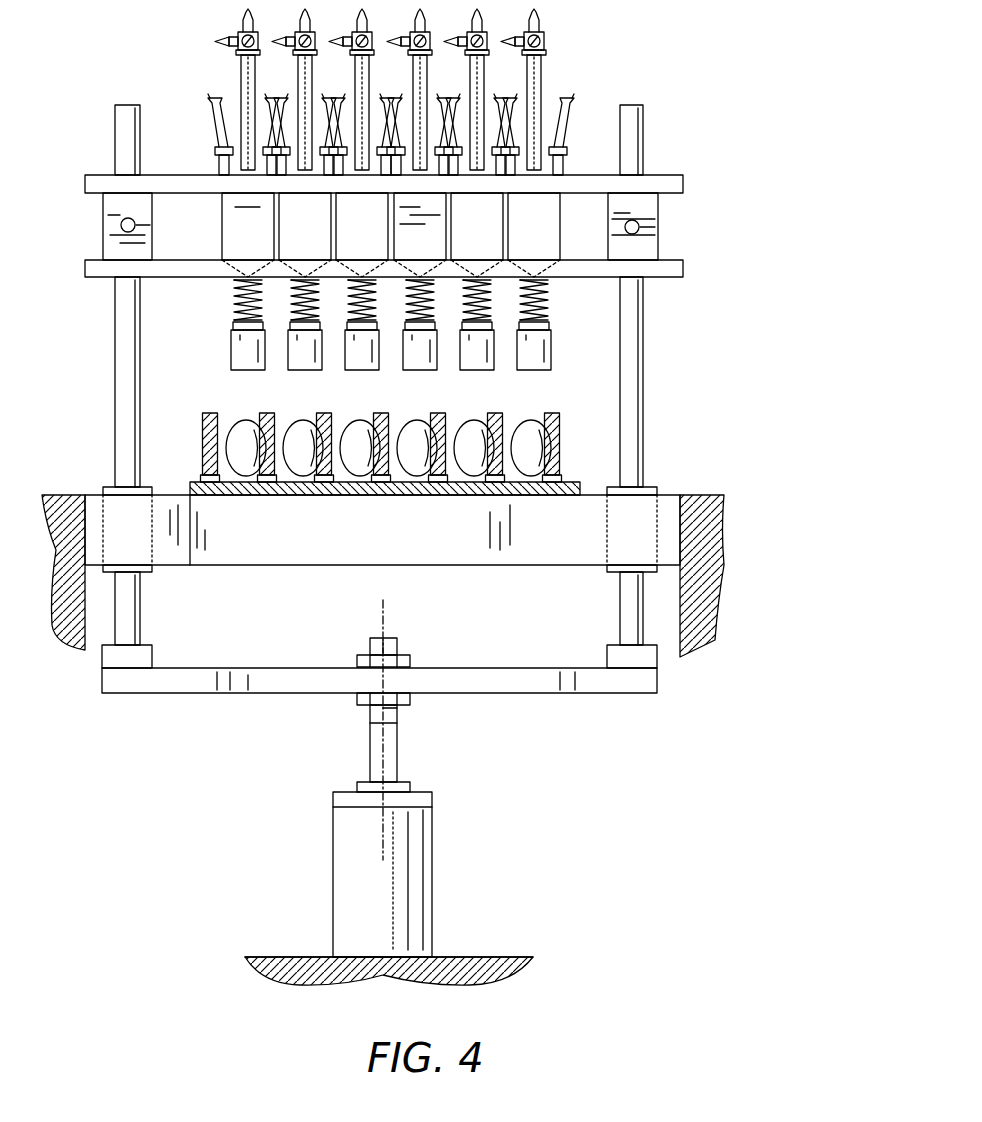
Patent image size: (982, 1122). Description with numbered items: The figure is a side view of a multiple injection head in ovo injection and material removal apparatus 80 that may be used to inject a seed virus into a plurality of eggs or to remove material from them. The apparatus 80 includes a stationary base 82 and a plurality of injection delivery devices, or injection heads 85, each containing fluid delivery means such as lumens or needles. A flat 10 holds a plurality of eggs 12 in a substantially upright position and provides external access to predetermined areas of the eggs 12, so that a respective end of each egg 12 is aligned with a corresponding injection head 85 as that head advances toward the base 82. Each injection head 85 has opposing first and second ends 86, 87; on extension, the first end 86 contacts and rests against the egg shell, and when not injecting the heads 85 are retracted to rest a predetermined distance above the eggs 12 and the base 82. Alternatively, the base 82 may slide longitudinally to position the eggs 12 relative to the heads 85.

The apparatus 80 is at (818, 412).
The second end 87 is at (546, 47).
The injection head 85 is at (280, 233).
The first end 86 is at (550, 360).
The egg 12 is at (305, 422).
The flat 10 is at (566, 427).
The stationary base 82 is at (657, 522).